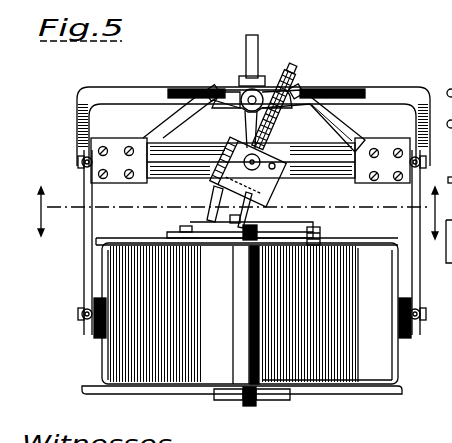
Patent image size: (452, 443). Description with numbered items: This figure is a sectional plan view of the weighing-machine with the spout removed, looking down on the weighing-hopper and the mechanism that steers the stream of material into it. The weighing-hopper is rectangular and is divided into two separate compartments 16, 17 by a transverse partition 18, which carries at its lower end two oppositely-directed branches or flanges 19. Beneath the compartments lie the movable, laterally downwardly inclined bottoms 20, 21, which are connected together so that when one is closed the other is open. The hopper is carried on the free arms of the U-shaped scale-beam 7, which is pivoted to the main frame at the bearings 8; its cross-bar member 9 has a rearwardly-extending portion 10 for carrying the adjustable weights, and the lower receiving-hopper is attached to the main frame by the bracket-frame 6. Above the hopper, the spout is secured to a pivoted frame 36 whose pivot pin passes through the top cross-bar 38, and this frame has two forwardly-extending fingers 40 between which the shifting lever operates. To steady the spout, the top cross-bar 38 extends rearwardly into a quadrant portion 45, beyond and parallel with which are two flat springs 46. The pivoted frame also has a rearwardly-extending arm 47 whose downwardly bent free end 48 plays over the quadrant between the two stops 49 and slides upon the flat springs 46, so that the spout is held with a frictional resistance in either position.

The bracket-frame 6 is at (234, 213).
The scale-beam 7 is at (83, 252).
The bearings 8 is at (80, 313).
The cross-bar member 9 is at (380, 90).
The rearwardly-extending portion 10 is at (256, 52).
The compartment 16 is at (247, 311).
The compartment 17 is at (309, 314).
The transverse partition 18 is at (243, 391).
The branches or flanges 19 is at (235, 285).
The bottom 20 is at (181, 384).
The bottom 21 is at (346, 381).
The pivoted frame 36 is at (254, 173).
The top cross-bar 38 is at (322, 171).
The forwardly-extending fingers 40 is at (210, 193).
The quadrant portion 45 is at (226, 106).
The flat springs 46 is at (233, 87).
The rearwardly-extending arm 47 is at (279, 135).
The free end 48 is at (300, 72).
The stops 49 is at (212, 90).